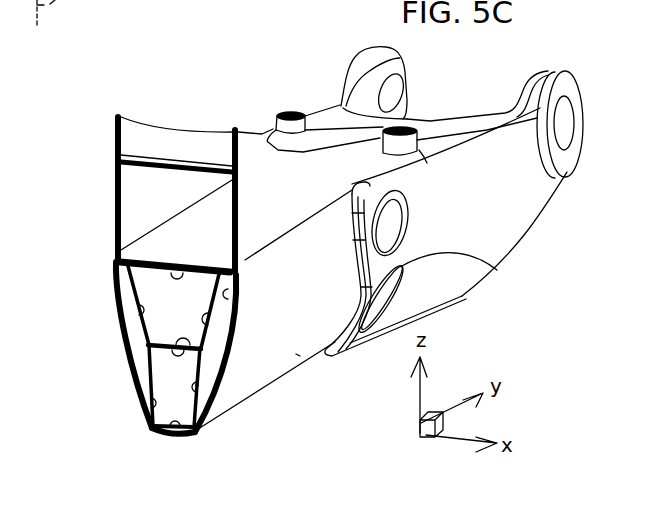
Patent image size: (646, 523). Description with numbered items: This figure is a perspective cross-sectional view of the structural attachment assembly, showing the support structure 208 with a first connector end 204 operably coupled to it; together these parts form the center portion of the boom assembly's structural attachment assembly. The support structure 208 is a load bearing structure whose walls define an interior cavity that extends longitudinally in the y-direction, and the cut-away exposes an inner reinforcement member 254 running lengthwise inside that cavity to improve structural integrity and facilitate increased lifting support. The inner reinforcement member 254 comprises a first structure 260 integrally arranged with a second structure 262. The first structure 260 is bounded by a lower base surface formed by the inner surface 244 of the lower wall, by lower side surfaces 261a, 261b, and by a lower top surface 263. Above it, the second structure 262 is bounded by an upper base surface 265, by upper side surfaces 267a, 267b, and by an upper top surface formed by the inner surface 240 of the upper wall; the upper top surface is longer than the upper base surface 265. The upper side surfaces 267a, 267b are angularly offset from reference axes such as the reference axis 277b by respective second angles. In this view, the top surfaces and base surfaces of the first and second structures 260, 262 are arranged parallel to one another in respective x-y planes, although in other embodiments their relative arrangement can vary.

The first connector end 204 is at (497, 220).
The support structure 208 is at (298, 355).
The inner surface 240 is at (166, 260).
The inner surface 244 is at (165, 428).
The inner reinforcement member 254 is at (130, 293).
The first structure 260 is at (135, 395).
The lower side surface 261a is at (151, 413).
The lower side surface 261b is at (203, 407).
The second structure 262 is at (222, 291).
The lower top surface 263 is at (207, 365).
The upper base surface 265 is at (150, 344).
The upper side surface 267a is at (134, 308).
The upper side surface 267b is at (213, 312).
The reference axis 277b is at (88, 13).